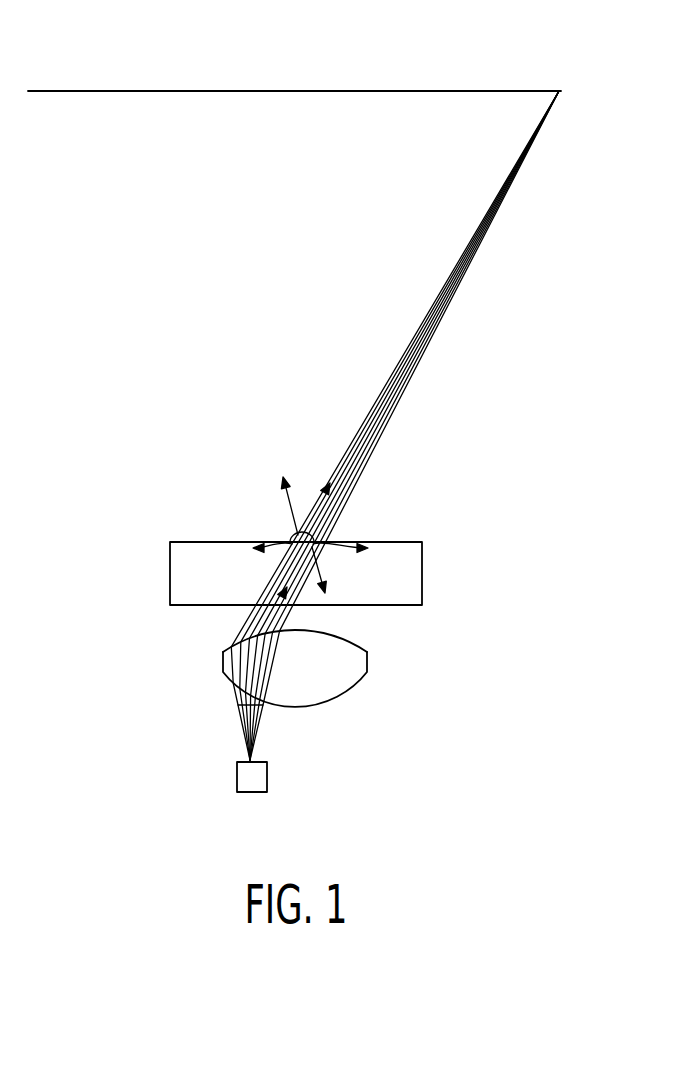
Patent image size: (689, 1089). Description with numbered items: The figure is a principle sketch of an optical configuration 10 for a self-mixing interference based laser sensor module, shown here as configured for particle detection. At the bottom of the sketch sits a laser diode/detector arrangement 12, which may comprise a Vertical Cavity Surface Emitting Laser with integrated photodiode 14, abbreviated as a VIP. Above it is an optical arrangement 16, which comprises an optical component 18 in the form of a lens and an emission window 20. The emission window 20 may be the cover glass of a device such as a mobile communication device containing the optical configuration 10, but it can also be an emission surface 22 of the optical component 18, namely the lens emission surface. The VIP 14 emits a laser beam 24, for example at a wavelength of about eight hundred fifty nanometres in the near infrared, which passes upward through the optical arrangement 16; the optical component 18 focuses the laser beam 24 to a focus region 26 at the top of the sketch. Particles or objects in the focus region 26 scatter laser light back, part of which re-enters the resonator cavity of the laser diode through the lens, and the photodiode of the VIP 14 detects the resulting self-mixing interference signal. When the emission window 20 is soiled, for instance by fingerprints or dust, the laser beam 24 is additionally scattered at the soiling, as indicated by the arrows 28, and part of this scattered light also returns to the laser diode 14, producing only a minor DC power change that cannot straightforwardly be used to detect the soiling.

The optical configuration 10 is at (468, 545).
The laser diode/detector arrangement 12 is at (223, 778).
The Vertical Cavity Surface Emitting Laser with integrated photodiode 14 is at (257, 778).
The optical arrangement 16 is at (193, 643).
The optical component 18 is at (347, 680).
The emission window 20 is at (187, 540).
The emission surface 22 is at (353, 640).
The laser beam 24 is at (403, 342).
The focus region 26 is at (543, 89).
The arrows 28 is at (297, 503).